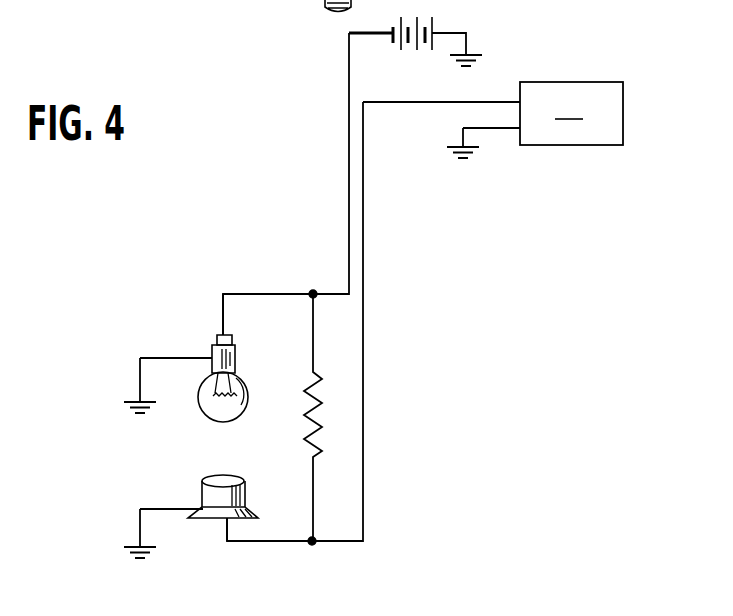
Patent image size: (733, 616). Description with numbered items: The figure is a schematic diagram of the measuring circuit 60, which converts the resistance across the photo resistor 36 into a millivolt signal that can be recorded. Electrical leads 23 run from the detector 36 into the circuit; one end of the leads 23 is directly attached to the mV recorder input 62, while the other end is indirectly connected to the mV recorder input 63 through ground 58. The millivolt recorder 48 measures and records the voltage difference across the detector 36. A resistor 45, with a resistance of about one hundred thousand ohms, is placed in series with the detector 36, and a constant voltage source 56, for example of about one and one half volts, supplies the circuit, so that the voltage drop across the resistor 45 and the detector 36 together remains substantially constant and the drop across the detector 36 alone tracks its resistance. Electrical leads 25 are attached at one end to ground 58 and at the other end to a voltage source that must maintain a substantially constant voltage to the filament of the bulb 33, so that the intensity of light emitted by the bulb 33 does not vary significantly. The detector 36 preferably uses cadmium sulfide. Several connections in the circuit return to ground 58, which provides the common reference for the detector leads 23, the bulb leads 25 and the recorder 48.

The battery 56 is at (436, 16).
The ground 58 is at (485, 62).
The mV recorder input 62 is at (520, 101).
The millivolt recorder 48 is at (571, 113).
The mV recorder input 63 is at (520, 131).
The measuring circuit 60 is at (287, 191).
The electrical leads 25 is at (177, 357).
The bulb 33 is at (207, 407).
The resistor 45 is at (303, 402).
The photo resistor 36 is at (217, 478).
The electrical leads 23 is at (175, 510).